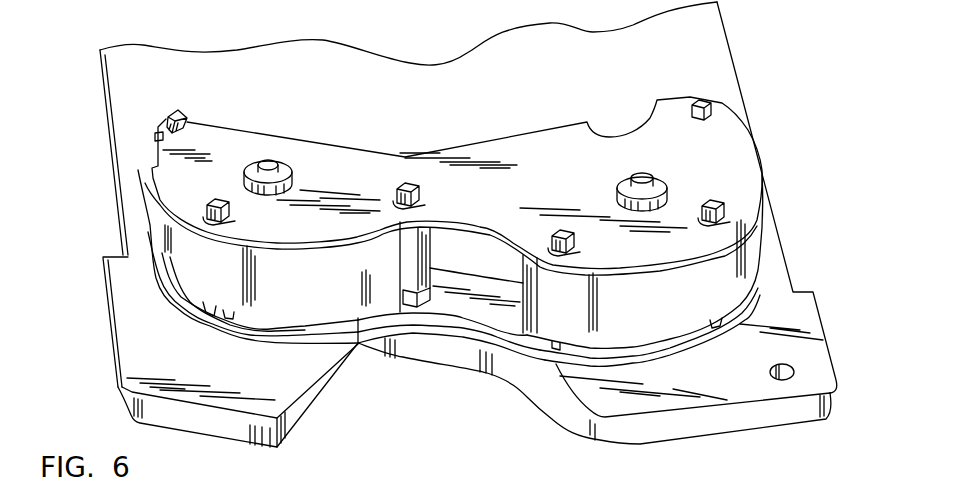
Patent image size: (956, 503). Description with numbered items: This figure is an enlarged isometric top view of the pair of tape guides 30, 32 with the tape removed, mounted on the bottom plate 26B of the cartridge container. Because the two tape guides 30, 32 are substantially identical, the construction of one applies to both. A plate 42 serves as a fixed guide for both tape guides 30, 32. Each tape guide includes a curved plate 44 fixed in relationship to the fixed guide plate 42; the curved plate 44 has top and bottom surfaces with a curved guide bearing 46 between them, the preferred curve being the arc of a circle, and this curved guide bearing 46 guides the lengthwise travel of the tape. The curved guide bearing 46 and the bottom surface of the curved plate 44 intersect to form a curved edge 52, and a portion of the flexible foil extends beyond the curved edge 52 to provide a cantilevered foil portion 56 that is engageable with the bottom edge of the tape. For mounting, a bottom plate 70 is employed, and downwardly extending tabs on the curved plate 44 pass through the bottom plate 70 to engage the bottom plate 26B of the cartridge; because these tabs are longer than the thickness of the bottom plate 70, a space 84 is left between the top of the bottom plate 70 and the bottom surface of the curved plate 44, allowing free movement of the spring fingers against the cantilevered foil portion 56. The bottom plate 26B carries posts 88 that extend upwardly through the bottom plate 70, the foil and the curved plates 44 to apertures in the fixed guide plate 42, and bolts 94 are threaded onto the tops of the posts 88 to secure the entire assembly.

The bottom plate 26B is at (547, 407).
The tape guide 30 is at (347, 180).
The tape guide 32 is at (683, 138).
The fixed guide plate 42 is at (507, 150).
The curved plate 44 is at (190, 262).
The curved guide bearing 46 is at (314, 296).
The curved edge 52 is at (366, 345).
The cantilevered foil portion 56 is at (167, 292).
The bottom plate 70 is at (220, 330).
The space 84 is at (226, 192).
The posts 88 is at (270, 160).
The bolts 94 is at (284, 163).